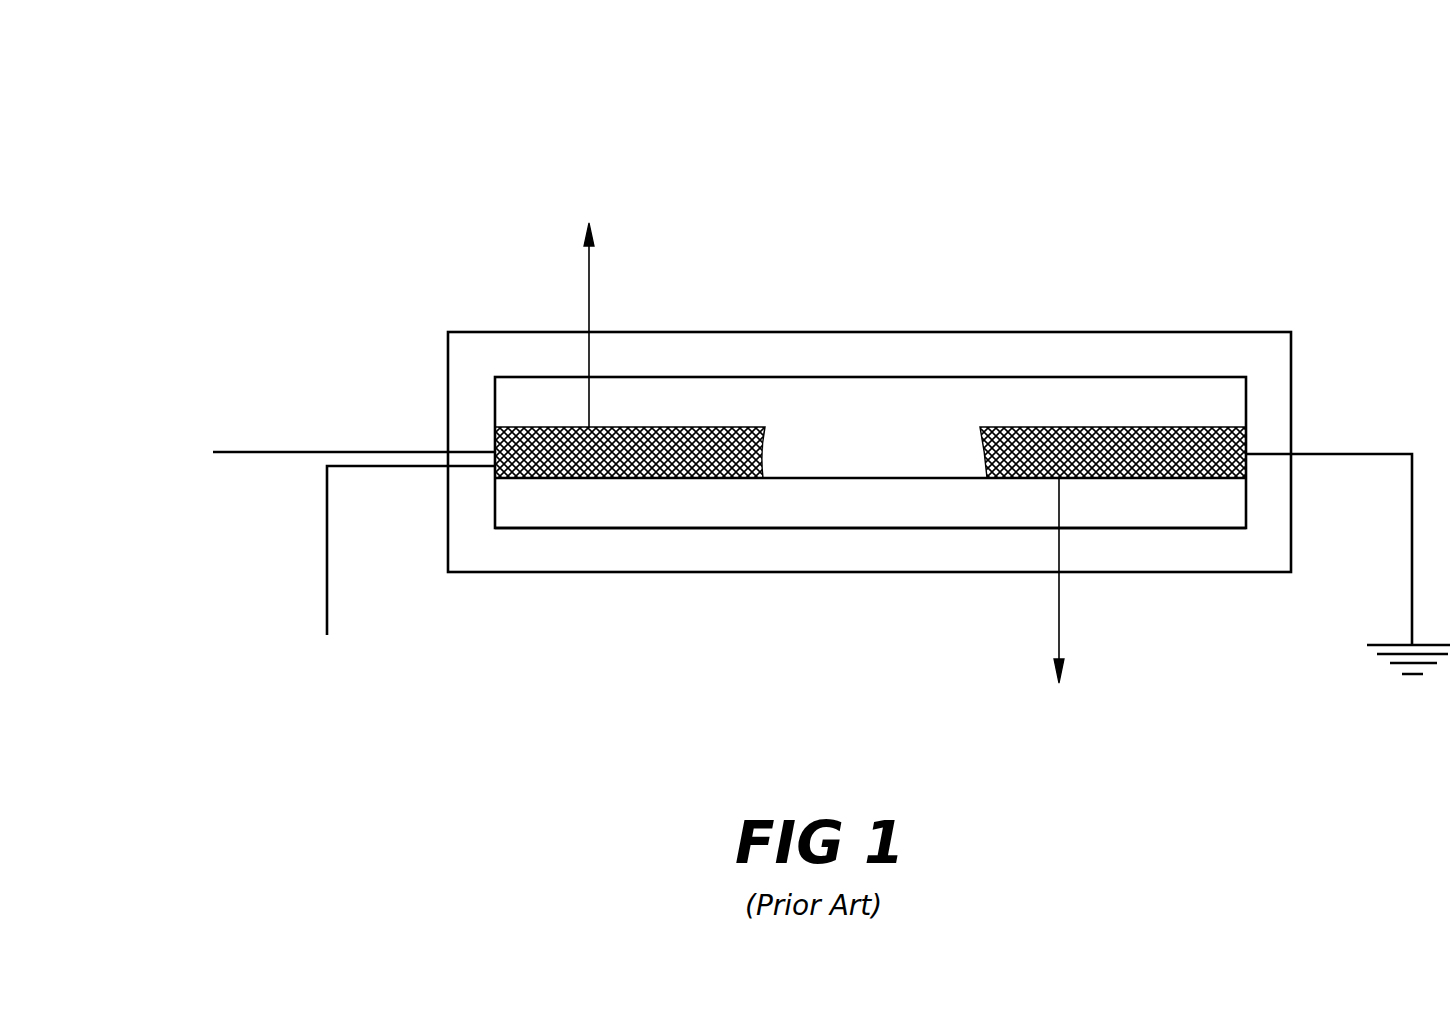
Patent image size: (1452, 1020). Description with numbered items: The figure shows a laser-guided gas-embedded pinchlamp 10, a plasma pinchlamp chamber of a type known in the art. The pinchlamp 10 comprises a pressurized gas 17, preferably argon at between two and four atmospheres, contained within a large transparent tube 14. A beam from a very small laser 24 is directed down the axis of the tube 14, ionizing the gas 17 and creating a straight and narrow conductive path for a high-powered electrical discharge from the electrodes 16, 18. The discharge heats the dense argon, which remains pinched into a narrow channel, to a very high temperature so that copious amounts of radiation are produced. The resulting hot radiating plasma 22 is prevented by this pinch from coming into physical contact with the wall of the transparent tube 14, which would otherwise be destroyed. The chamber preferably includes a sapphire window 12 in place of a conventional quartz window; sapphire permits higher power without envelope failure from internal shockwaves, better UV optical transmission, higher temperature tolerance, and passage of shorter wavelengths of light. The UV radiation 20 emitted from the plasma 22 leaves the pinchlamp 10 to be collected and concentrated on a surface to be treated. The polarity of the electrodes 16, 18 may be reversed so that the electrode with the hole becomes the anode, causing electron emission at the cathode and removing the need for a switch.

The laser-guided gas-embedded pinchlamp 10 is at (1152, 254).
The sapphire window 12 is at (443, 447).
The transparent tube 14 is at (862, 366).
The electrode 16 is at (330, 632).
The pressurized gas 17 is at (864, 508).
The electrode 18 is at (1387, 663).
The UV radiation 20 is at (589, 272).
The hot radiating plasma 22 is at (932, 437).
The laser 24 is at (303, 448).